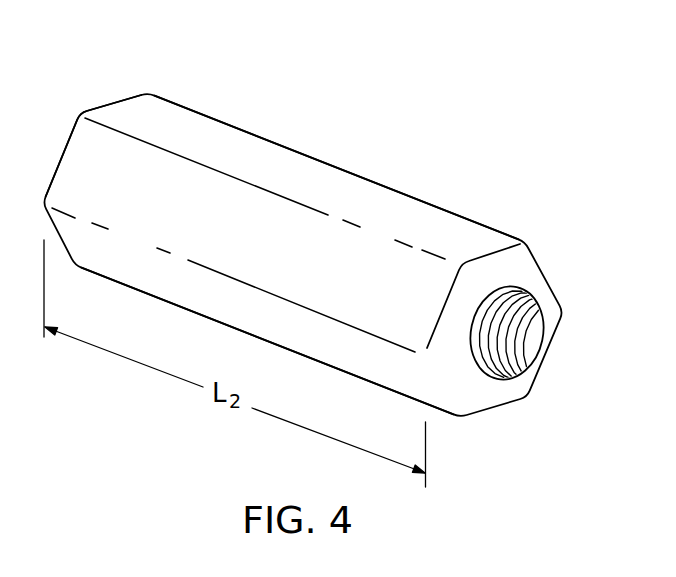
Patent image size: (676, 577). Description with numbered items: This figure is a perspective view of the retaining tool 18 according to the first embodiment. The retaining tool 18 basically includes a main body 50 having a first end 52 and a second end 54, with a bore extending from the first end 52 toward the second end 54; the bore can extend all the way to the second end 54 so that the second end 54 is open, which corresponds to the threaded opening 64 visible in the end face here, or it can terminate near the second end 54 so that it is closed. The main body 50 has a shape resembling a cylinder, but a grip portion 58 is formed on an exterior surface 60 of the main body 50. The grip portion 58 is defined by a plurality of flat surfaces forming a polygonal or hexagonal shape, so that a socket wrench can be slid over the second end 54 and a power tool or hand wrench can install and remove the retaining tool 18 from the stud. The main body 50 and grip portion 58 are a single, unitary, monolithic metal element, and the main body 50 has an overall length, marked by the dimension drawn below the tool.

The retaining tool 18 is at (403, 123).
The main body 50 is at (172, 283).
The first end 52 is at (113, 100).
The second end 54 is at (522, 268).
The grip portion 58 is at (258, 158).
The exterior surface 60 is at (430, 223).
The threaded bore 64 is at (525, 320).